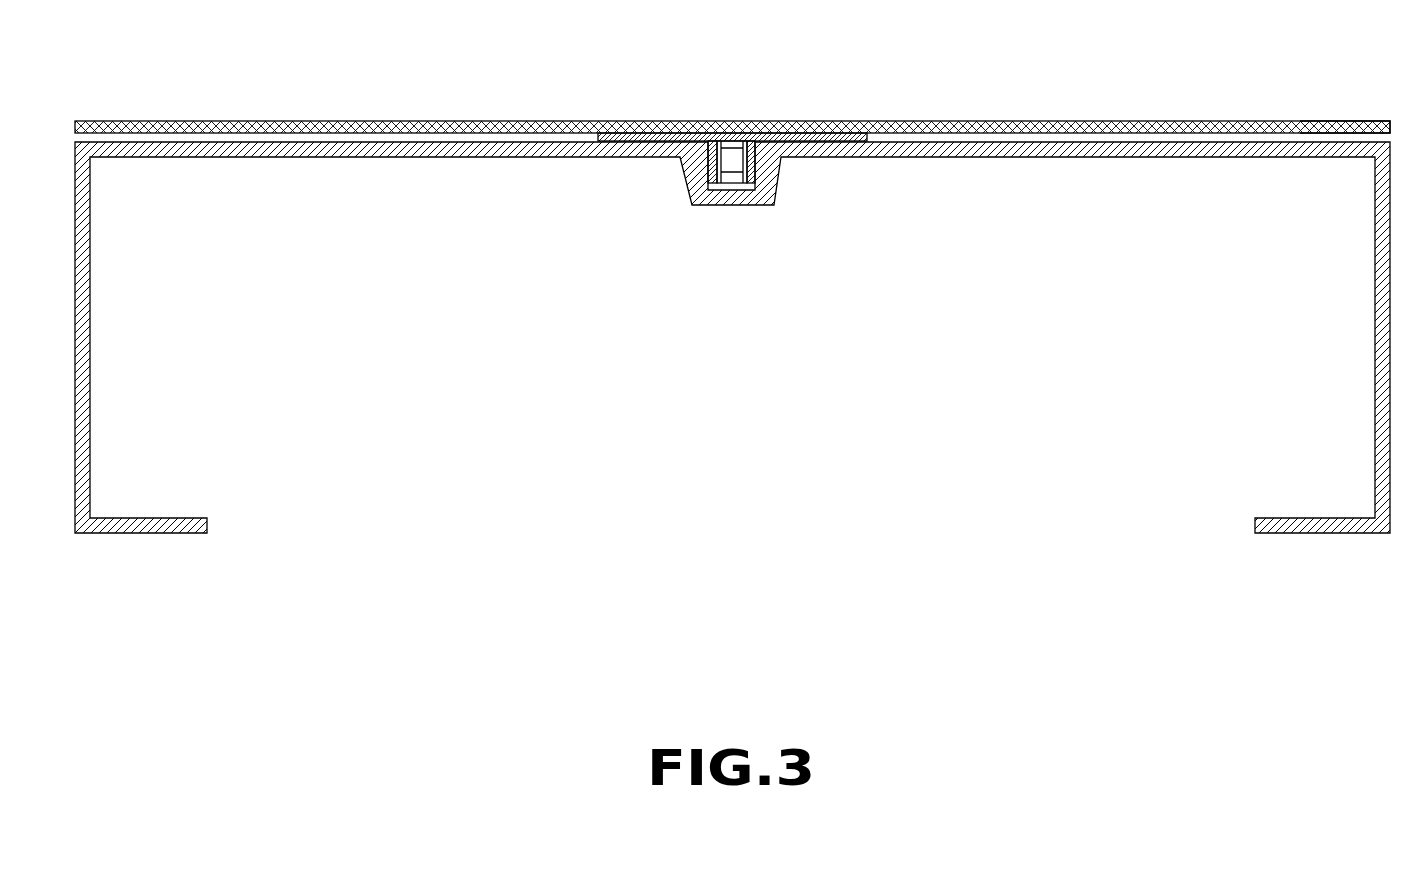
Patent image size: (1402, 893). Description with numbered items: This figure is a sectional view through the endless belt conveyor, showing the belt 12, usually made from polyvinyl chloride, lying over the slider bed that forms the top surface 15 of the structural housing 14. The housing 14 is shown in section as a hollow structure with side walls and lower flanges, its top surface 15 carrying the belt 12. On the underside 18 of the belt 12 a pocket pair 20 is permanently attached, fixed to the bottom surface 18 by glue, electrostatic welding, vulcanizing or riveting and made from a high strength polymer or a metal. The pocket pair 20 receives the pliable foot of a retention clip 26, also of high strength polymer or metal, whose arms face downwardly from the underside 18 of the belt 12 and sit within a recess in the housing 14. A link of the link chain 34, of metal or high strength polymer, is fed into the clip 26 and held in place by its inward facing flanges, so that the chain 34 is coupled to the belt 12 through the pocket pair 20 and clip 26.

The belt 12 is at (732, 88).
The structural housing 14 is at (400, 158).
The top surface 15 is at (512, 138).
The underside of belt 18 is at (1308, 137).
The pocket pair 20 is at (866, 141).
The retention clip 26 is at (757, 165).
The link chain 34 is at (721, 180).